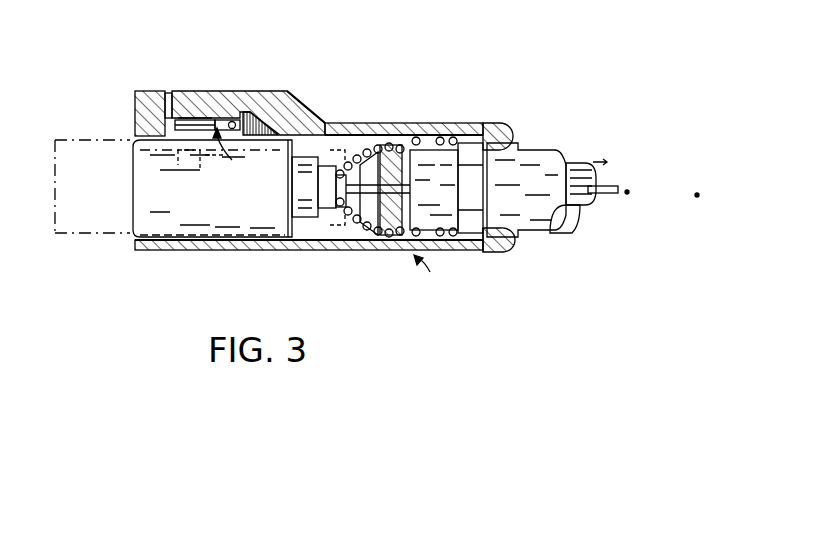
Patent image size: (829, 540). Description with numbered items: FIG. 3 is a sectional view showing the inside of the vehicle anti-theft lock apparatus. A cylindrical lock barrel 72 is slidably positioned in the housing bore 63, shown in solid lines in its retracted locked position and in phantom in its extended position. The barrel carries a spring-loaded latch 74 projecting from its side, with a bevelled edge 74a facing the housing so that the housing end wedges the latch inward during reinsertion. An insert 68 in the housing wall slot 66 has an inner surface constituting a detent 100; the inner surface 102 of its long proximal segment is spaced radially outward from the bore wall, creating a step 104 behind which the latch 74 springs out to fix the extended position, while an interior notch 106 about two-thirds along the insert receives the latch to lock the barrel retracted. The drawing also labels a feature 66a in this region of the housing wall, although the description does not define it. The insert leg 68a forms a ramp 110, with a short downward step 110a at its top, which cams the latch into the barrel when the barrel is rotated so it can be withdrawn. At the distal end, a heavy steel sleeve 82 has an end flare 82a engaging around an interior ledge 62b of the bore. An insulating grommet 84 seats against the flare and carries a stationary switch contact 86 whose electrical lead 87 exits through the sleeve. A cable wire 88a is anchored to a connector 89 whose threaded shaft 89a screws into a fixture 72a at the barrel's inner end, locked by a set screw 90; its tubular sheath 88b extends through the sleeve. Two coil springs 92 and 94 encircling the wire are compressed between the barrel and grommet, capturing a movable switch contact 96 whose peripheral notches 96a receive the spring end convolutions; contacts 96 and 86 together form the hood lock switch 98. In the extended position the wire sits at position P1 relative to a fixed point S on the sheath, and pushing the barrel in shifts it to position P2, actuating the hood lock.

The interior ledge 62b is at (513, 237).
The housing bore 63 is at (172, 243).
The slot 66 is at (168, 103).
The bore of end wall 66a is at (185, 155).
The insert 68 is at (226, 93).
The insert leg 68a is at (205, 160).
The lock barrel 72 is at (140, 205).
The fixture 72a is at (287, 218).
The latch 74 is at (272, 128).
The bevelled edge 74a is at (262, 113).
The steel sleeve 82 is at (537, 150).
The end flare 82a is at (498, 138).
The grommet 84 is at (481, 253).
The stationary switch contact 86 is at (407, 148).
The electrical lead 87 is at (580, 168).
The cable wire 88a is at (603, 203).
The tubular sheath 88b is at (578, 207).
The connector 89 is at (330, 222).
The threaded shaft 89a is at (305, 180).
The set screw 90 is at (293, 152).
The coil spring 92 is at (343, 165).
The coil spring 94 is at (456, 235).
The movable switch contact 96 is at (366, 238).
The peripheral notches 96a is at (398, 150).
The hood lock switch 98 is at (418, 275).
The detent 100 is at (237, 150).
The inner surface 102 is at (232, 121).
The step 104 is at (172, 140).
The interior notch 106 is at (258, 110).
The ramp 110 is at (185, 137).
The ramp step 110a is at (218, 118).
The fixed point S is at (587, 205).
The selected position P1 is at (627, 193).
The position P2 is at (697, 196).